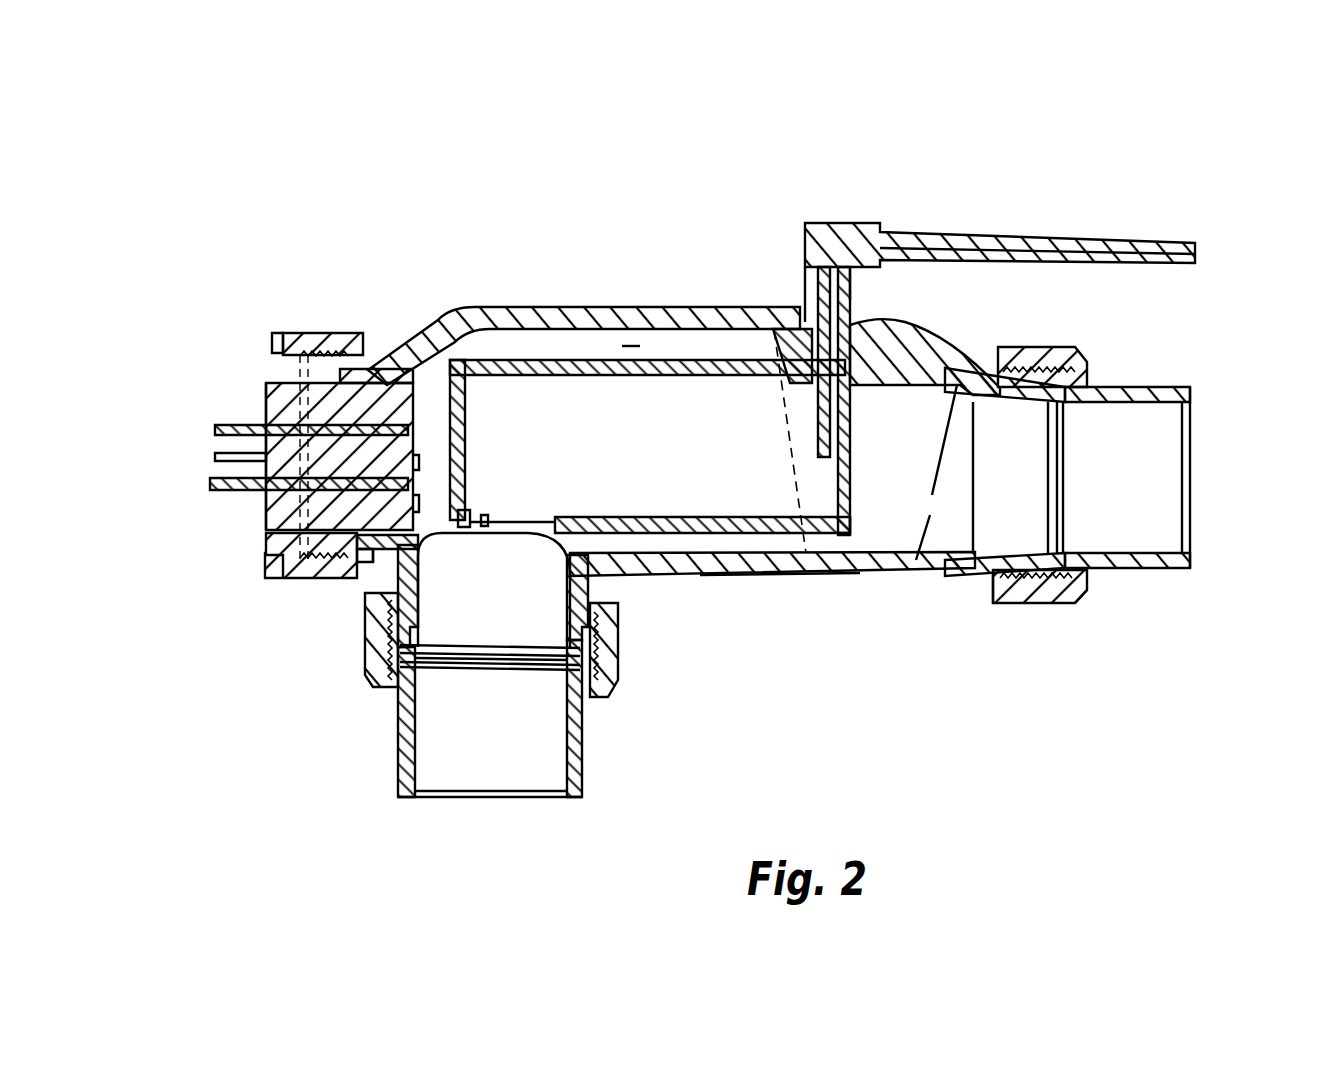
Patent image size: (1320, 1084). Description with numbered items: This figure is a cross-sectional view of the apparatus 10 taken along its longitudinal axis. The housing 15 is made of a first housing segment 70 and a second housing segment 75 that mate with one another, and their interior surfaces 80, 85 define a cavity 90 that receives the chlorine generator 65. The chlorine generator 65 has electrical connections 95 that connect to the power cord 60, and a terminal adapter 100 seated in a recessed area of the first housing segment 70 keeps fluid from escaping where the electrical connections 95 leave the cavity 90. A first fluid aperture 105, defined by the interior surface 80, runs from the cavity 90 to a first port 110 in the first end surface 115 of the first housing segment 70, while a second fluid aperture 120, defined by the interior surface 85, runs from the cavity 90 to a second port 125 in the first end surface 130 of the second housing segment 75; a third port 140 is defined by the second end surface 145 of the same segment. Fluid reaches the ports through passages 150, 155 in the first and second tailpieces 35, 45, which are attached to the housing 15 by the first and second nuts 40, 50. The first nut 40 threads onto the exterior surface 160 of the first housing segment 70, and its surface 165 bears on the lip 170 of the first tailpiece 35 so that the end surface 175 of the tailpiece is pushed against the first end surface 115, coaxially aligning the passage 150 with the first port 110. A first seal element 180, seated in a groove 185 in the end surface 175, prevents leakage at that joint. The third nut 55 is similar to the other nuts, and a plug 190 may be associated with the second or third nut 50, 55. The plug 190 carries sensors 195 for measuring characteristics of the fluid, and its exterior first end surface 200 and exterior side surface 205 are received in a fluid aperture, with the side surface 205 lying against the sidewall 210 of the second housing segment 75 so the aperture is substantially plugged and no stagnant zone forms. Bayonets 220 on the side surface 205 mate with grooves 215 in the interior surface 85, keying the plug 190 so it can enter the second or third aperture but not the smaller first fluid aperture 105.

The apparatus 10 is at (672, 188).
The housing 15 is at (560, 303).
The first tailpiece 35 is at (1192, 391).
The first nut 40 is at (1078, 606).
The second tailpiece 45 is at (400, 765).
The second nut 50 is at (612, 668).
The third nut 55 is at (293, 333).
The power cord 60 is at (973, 232).
The chlorine generator 65 is at (492, 383).
The first housing segment 70 is at (926, 578).
The second housing segment 75 is at (780, 576).
The interior surface of first housing segment 80 is at (848, 575).
The interior surface of second housing segment 85 is at (645, 577).
The cavity 90 is at (628, 345).
The electrical connections 95 is at (835, 306).
The terminal adapter 100 is at (812, 330).
The first fluid aperture 105 is at (975, 400).
The first port 110 is at (1062, 428).
The first end surface of first housing segment 115 is at (1055, 384).
The second fluid aperture 120 is at (545, 597).
The second port 125 is at (520, 655).
The first end surface of second housing segment 130 is at (608, 690).
The third port 140 is at (285, 548).
The second end surface of second housing segment 145 is at (360, 340).
The passage 150 is at (1167, 430).
The passage 155 is at (527, 773).
The exterior surface of first housing segment 160 is at (990, 595).
The surface of first nut 165 is at (1093, 575).
The lip 170 is at (1035, 606).
The end surface of first tailpiece 175 is at (1083, 553).
The first seal element 180 is at (1083, 533).
The groove 185 is at (1093, 360).
The plug 190 is at (265, 392).
The sensors 195 is at (215, 487).
The exterior first end surface 200 is at (425, 380).
The exterior side surface 205 is at (405, 387).
The sidewall 210 is at (370, 555).
The grooves 215 is at (300, 572).
The bayonets 220 is at (266, 410).